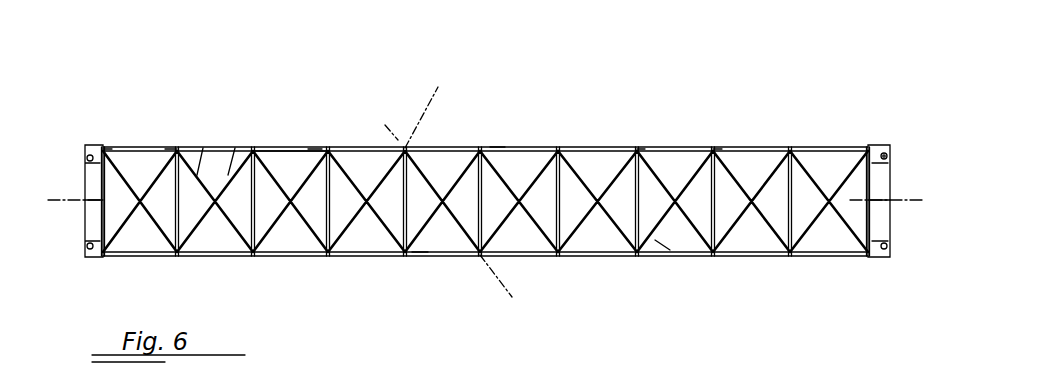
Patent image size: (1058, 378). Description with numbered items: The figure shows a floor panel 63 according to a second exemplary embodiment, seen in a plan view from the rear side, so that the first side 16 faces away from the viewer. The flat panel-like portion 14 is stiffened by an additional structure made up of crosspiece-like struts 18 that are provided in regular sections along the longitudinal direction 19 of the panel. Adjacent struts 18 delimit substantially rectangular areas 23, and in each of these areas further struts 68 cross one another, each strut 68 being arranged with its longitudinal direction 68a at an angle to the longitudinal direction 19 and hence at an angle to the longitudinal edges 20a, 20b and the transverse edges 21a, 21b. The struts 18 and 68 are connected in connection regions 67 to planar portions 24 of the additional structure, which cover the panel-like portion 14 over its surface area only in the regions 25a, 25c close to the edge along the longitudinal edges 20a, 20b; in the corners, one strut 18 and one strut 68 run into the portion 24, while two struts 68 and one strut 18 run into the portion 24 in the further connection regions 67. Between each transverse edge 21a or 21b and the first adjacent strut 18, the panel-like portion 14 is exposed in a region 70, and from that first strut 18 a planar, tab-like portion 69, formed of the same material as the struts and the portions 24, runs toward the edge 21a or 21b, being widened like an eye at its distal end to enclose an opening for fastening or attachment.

The panel-like portion 14 is at (255, 248).
The first side 16 is at (735, 364).
The strut 18 is at (87, 183).
The longitudinal direction 19 is at (915, 198).
The longitudinal edge 20a is at (521, 142).
The longitudinal edge 20b is at (369, 260).
The transverse edge 21a is at (85, 218).
The transverse edge 21b is at (900, 146).
The rectangular area 23 is at (368, 146).
The portion of the additional structure 24 is at (497, 147).
The longitudinal-side region close to the edge 25a is at (315, 140).
The longitudinal-side region close to the edge 25c is at (660, 248).
The floor panel 63 is at (502, 196).
The connection region 67 is at (108, 142).
The strut 68 is at (197, 175).
The longitudinal direction of the strut 68a is at (438, 87).
The tab-like portion 69 is at (95, 147).
The exposed region 70 is at (888, 210).